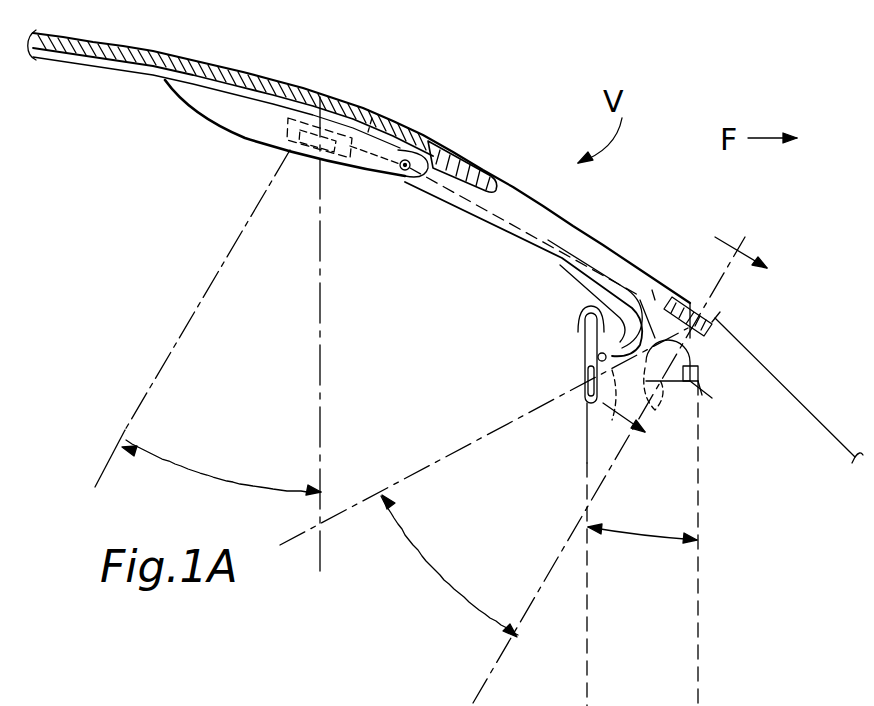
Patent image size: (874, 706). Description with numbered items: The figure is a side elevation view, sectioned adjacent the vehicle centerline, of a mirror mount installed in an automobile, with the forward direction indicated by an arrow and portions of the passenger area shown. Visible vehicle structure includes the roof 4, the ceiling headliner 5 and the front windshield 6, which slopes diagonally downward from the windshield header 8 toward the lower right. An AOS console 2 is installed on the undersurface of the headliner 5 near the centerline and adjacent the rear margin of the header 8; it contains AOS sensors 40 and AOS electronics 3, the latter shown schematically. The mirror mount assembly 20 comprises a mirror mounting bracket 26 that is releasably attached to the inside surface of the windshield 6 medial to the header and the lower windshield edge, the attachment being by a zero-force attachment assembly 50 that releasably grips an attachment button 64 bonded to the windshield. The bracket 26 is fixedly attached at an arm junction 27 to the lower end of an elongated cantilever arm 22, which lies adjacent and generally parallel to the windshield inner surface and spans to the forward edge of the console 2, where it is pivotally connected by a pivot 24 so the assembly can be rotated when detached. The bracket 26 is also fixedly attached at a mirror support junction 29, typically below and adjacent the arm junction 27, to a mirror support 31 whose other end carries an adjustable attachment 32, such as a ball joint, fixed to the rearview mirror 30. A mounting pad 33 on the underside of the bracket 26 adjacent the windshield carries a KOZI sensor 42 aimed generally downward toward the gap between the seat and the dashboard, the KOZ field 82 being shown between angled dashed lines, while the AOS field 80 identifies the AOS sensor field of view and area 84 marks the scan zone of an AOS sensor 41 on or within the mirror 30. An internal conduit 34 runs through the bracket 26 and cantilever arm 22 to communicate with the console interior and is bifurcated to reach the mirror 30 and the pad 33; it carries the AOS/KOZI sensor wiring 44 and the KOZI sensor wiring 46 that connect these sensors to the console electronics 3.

The AOS console 2 is at (195, 108).
The AOS electronics 3 is at (284, 153).
The roof 4 is at (128, 49).
The ceiling headliner 5 is at (97, 70).
The front windshield 6 is at (590, 231).
The windshield header 8 is at (462, 160).
The mirror mount assembly 20 is at (463, 357).
The cantilever arm 22 is at (512, 233).
The pivot 24 is at (400, 172).
The mirror mounting bracket 26 is at (699, 335).
The arm junction 27 is at (652, 290).
The mirror support junction 29 is at (600, 298).
The rearview mirror 30 is at (578, 400).
The mirror support 31 is at (583, 314).
The adjustable attachment 32 is at (583, 353).
The mounting pad 33 is at (702, 381).
The internal conduit 34 is at (470, 218).
The AOS sensors 40 is at (314, 118).
The AOS sensor 41 is at (586, 379).
The KOZI sensor 42 is at (704, 392).
The AOS/KOZI sensor wiring 44 is at (374, 118).
The KOZI sensor wiring 46 is at (533, 195).
The zero-force attachment assembly 50 is at (722, 353).
The attachment button 64 is at (688, 298).
The AOS field 80 is at (255, 474).
The KOZ field 82 is at (645, 538).
The scan zone area 84 is at (445, 574).